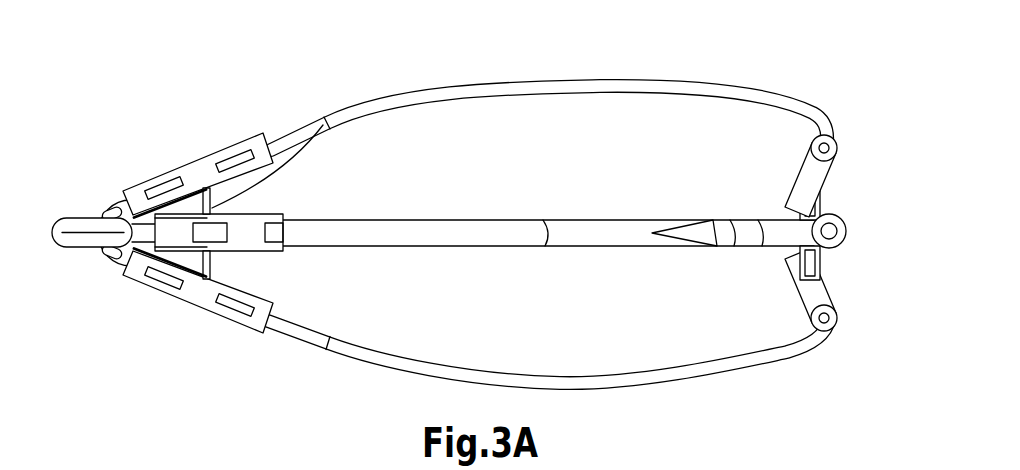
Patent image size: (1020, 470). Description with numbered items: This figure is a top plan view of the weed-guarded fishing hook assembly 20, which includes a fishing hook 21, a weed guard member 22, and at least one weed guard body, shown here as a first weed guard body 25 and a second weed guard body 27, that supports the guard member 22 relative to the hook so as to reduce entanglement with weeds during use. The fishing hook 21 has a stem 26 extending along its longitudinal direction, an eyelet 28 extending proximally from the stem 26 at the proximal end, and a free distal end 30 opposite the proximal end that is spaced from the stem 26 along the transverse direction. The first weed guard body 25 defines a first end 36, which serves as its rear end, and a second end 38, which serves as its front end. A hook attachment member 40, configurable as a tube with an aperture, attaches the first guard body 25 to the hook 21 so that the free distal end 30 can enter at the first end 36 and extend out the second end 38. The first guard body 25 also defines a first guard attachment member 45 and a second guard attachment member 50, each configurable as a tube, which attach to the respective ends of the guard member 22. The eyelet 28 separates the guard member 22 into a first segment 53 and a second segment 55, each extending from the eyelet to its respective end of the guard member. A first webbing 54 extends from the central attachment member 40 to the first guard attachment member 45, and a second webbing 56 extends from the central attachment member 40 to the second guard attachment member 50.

The weed-guarded fishing hook assembly 20 is at (202, 110).
The fishing hook 21 is at (414, 220).
The weed guard member 22 is at (511, 77).
The first weed guard body 25 is at (834, 195).
The stem 26 is at (544, 220).
The second weed guard body 27 is at (503, 192).
The eyelet 28 is at (68, 218).
The free distal end 30 is at (748, 220).
The first end 36 is at (115, 269).
The second end 38 is at (283, 249).
The hook attachment member 40 is at (268, 213).
The first guard attachment member 45 is at (193, 305).
The second guard attachment member 50 is at (231, 146).
The first segment 53 is at (625, 387).
The first webbing 54 is at (822, 268).
The second segment 55 is at (617, 80).
The second webbing 56 is at (299, 157).